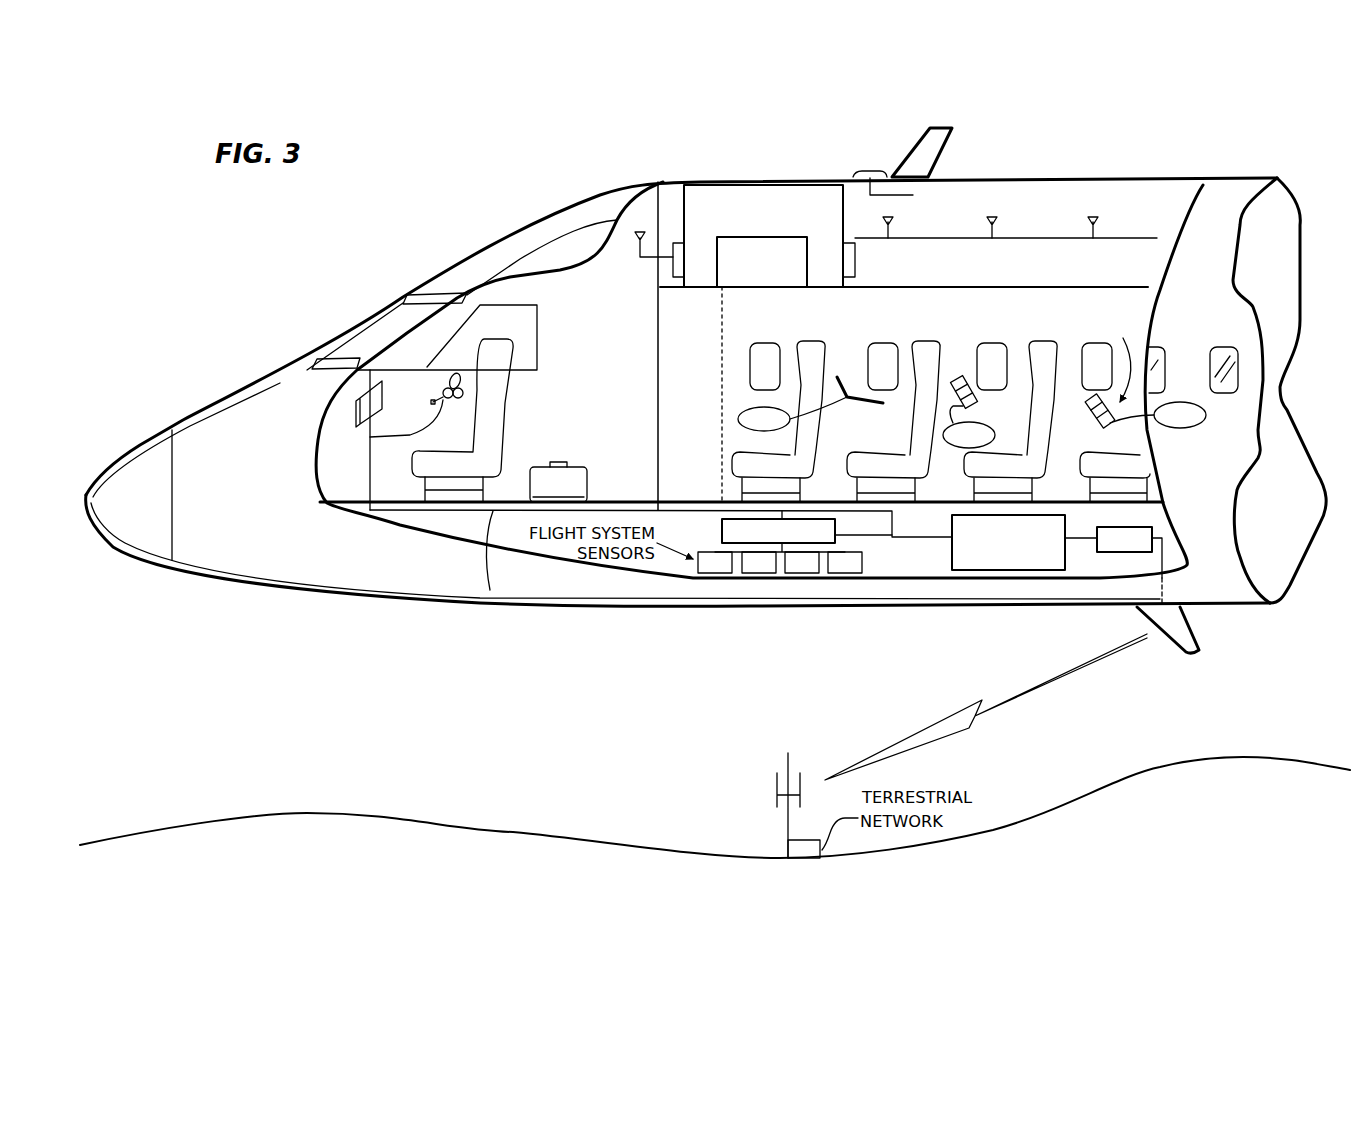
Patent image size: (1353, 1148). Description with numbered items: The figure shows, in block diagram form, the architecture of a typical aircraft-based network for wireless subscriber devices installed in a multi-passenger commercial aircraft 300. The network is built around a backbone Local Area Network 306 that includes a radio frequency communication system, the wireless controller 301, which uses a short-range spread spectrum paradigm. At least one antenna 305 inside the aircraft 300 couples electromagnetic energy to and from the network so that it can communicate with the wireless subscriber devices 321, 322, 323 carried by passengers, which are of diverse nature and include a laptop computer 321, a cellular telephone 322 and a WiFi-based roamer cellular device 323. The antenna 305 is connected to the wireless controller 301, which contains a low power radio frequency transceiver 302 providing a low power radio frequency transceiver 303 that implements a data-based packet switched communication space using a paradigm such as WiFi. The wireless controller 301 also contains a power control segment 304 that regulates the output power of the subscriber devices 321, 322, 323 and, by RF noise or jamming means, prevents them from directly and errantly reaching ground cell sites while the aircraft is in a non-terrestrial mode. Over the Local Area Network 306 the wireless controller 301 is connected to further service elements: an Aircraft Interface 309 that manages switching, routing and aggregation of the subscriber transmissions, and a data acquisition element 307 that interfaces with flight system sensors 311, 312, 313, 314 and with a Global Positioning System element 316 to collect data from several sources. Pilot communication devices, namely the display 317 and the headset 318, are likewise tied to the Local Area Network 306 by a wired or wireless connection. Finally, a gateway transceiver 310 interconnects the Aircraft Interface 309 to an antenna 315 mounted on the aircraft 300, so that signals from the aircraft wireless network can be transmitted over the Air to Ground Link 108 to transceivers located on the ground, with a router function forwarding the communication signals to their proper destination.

The multi-passenger commercial aircraft 300 is at (221, 578).
The wireless controller 301 is at (680, 206).
The low power radio frequency transceiver 302 is at (855, 263).
The low power radio frequency transceiver 303 is at (670, 266).
The power control segment 304 is at (717, 257).
The antenna 305 is at (998, 224).
The Local Area Network 306 is at (488, 602).
The data acquisition element 307 is at (838, 543).
The Aircraft Interface 309 is at (1030, 570).
The gateway transceiver 310 is at (1115, 552).
The flight system sensor 311 is at (706, 574).
The flight system sensor 312 is at (750, 574).
The flight system sensor 313 is at (793, 574).
The flight system sensor 314 is at (836, 574).
The antenna 315 is at (1200, 638).
The Global Positioning System element 316 is at (870, 170).
The display 317 is at (357, 402).
The headset 318 is at (440, 390).
The laptop computer 321 is at (836, 377).
The cellular telephone 322 is at (964, 377).
The WiFi-based roamer cellular device 323 is at (1111, 428).
The Air to Ground Link 108 is at (1025, 703).